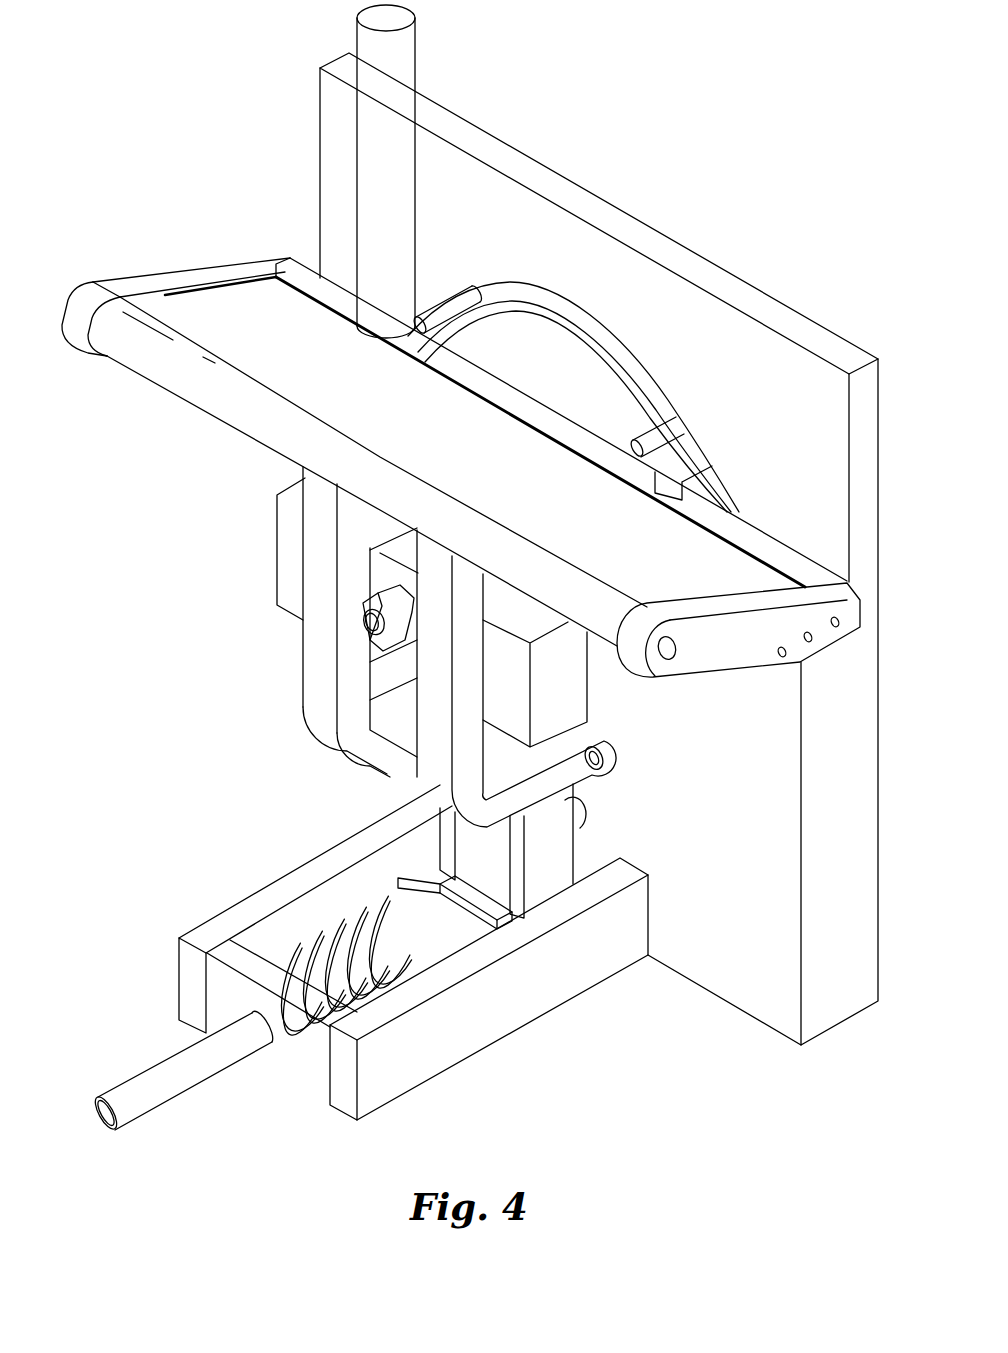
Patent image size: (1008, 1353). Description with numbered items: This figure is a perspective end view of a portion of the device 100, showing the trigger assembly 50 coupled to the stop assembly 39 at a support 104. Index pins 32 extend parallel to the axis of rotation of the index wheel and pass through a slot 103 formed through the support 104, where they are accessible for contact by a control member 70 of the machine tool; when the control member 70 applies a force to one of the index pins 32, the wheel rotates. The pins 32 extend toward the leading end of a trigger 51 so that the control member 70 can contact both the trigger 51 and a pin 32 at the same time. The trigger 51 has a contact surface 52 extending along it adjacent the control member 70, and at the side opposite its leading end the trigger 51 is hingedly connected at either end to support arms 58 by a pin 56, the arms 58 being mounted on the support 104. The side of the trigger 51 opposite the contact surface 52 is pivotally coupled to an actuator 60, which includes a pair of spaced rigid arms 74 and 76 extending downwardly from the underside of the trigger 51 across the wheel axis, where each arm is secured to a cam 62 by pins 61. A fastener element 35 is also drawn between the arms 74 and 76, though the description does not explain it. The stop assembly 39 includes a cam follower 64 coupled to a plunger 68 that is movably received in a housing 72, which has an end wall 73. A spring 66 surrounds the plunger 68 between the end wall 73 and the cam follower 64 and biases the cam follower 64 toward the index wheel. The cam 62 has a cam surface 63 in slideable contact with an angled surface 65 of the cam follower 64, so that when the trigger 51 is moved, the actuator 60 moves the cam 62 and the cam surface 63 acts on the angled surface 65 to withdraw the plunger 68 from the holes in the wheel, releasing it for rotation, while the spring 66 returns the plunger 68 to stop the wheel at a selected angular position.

The device 100 is at (756, 120).
The support 104 is at (493, 146).
The slot 103 is at (540, 307).
The control member 70 is at (412, 52).
The index pins 32 is at (454, 302).
The trigger assembly 50 is at (453, 473).
The trigger 51 is at (220, 312).
The contact surface 52 is at (283, 300).
The support arms 58 is at (122, 284).
The pin 56 is at (666, 654).
The actuator 60 is at (300, 544).
The rigid arm 74 is at (313, 588).
The rigid arm 76 is at (437, 758).
The nut 35 is at (410, 667).
The pins 61 is at (606, 757).
The cam 62 is at (546, 878).
The cam surface 63 is at (455, 895).
The cam follower 64 is at (396, 884).
The angled surface 65 is at (430, 882).
The spring 66 is at (297, 953).
The stop assembly 39 is at (363, 984).
The housing 72 is at (413, 984).
The end wall 73 is at (300, 1070).
The plunger 68 is at (195, 1068).